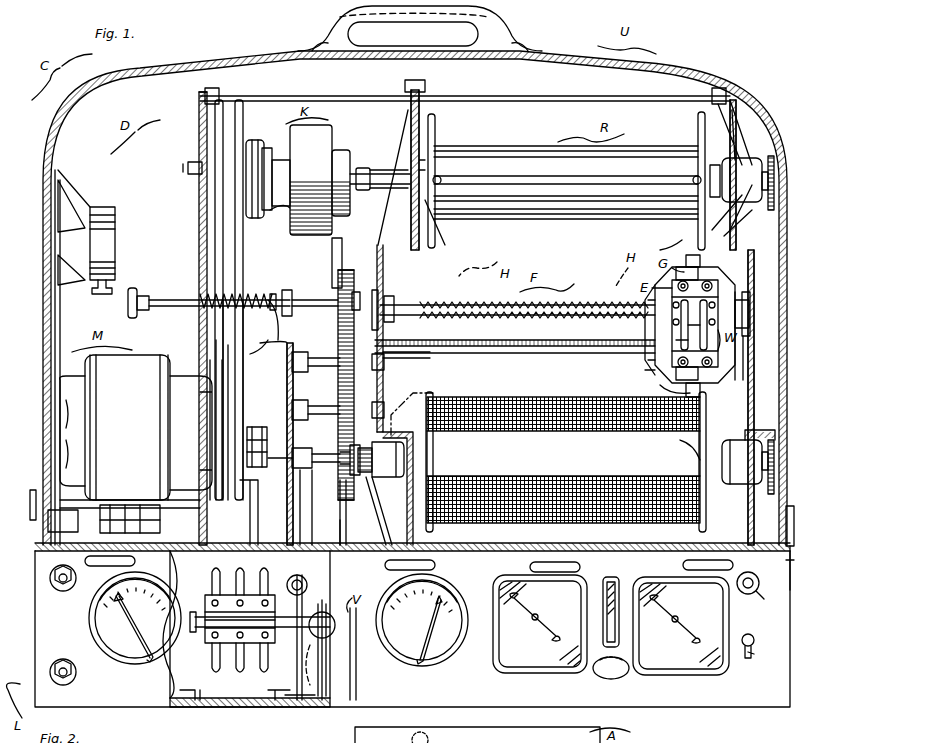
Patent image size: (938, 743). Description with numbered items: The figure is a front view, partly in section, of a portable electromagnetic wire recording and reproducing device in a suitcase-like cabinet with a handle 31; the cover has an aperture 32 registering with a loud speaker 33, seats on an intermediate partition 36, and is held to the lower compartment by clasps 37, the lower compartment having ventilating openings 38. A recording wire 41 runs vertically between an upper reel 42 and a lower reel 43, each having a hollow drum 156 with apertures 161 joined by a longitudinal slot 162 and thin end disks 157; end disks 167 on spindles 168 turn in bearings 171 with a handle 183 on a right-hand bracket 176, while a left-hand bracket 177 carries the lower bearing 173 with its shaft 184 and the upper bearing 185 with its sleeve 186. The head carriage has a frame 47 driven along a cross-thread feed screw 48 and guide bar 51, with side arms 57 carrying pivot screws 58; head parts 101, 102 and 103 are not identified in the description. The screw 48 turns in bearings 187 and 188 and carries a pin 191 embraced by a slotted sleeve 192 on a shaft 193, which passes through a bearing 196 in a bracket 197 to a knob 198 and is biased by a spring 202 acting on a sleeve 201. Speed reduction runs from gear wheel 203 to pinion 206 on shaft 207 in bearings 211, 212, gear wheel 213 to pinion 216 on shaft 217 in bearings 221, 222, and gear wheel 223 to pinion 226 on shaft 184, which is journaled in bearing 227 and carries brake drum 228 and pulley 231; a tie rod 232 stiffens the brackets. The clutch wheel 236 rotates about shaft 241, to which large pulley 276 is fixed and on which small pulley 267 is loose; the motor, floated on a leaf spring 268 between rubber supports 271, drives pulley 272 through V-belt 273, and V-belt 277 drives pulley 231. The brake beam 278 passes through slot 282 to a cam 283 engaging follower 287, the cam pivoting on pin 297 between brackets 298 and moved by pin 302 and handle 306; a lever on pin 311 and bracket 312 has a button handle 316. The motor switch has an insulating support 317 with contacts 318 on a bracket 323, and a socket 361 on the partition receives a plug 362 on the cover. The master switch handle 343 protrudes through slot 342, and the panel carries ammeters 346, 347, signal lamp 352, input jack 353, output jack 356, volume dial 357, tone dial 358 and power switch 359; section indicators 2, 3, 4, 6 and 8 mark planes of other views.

The handle 31 is at (495, 30).
The aperture 32 is at (34, 162).
The loud speaker 33 is at (84, 204).
The intermediate partition 36 is at (224, 542).
The clasps or locks 37 is at (26, 504).
The ventilating openings 38 is at (136, 560).
The wire 41 is at (695, 232).
The upper reel 42 is at (548, 152).
The lower reel 43 is at (514, 398).
The frame member 47 is at (656, 366).
The feed screw 48 is at (572, 302).
The guide bar 51 is at (584, 348).
The side arms 57 is at (654, 330).
The pivot screws 58 is at (624, 328).
The recording head 101 is at (676, 303).
The playback head 102 is at (676, 322).
The erase head 103 is at (676, 340).
The hollow drum portion 156 is at (614, 218).
The end disks 157 is at (436, 134).
The apertures 161 is at (442, 178).
The longitudinal slot 162 is at (506, 183).
The end disks 167 is at (700, 242).
The spindles 168 is at (762, 182).
The bearings 171 is at (748, 160).
The lower left-hand bearing 173 is at (370, 478).
The bracket 176 is at (730, 142).
The bracket 177 is at (408, 110).
The handle 183 is at (780, 142).
The shaft 184 is at (318, 486).
The upper left-hand bearing 185 is at (384, 168).
The sleeve 186 is at (360, 168).
The bearing 187 is at (744, 300).
The bearing 188 is at (398, 298).
The pin 191 is at (356, 292).
The slotted sleeve 192 is at (338, 296).
The shaft 193 is at (165, 306).
The bearing 196 is at (196, 292).
The bracket 197 is at (196, 206).
The knob 198 is at (133, 288).
The sleeve 201 is at (284, 312).
The spring 202 is at (286, 290).
The gear wheel 203 is at (334, 278).
The pinion 206 is at (318, 350).
The shaft 207 is at (296, 368).
The bearing 211 is at (390, 358).
The bearing 212 is at (346, 401).
The gear wheel 213 is at (344, 358).
The pinion 216 is at (337, 452).
The shaft 217 is at (318, 432).
The bearing 221 is at (382, 390).
The bearing 222 is at (300, 448).
The gear wheel 223 is at (381, 459).
The pinion 226 is at (346, 496).
The bearing 227 is at (336, 484).
The damping and brake drum 228 is at (316, 508).
The pulley 231 is at (242, 486).
The tie rod 232 is at (506, 96).
The wheel 236 is at (318, 134).
The shaft 241 is at (186, 172).
The small pulley 267 is at (268, 140).
The leaf spring 268 is at (124, 512).
The rubber standards or supports 271 is at (156, 514).
The small pulley 272 is at (246, 470).
The V-belt 273 is at (218, 360).
The large pulley 276 is at (244, 106).
The V-belt 277 is at (268, 214).
The beam or lever 278 is at (282, 216).
The slot 282 is at (338, 524).
The cam 283 is at (314, 584).
The follower 287 is at (336, 654).
The pin 297 is at (206, 654).
The brackets 298 is at (352, 718).
The pin 302 is at (295, 671).
The handle 306 is at (330, 636).
The pin 311 is at (284, 690).
The bracket 312 is at (316, 688).
The button handle 316 is at (289, 637).
The insulating support 317 is at (192, 598).
The contact members 318 is at (212, 674).
The bracket 323 is at (202, 710).
The slot 342 is at (636, 574).
The handle 343 is at (618, 692).
The ammeter 346 is at (414, 662).
The ammeter 347 is at (54, 588).
The signal lamp 352 is at (752, 592).
The microphone or input jack 353 is at (74, 696).
The output jack 356 is at (54, 602).
The volume control dial 357 is at (542, 674).
The tone control dial 358 is at (681, 641).
The power switch 359 is at (750, 658).
The socket 361 is at (112, 500).
The plug 362 is at (92, 486).
The section line 2 is at (766, 545).
The section line 3 is at (438, 252).
The section line 4 is at (523, 252).
The section line 6 is at (370, 300).
The section line 8 is at (355, 226).